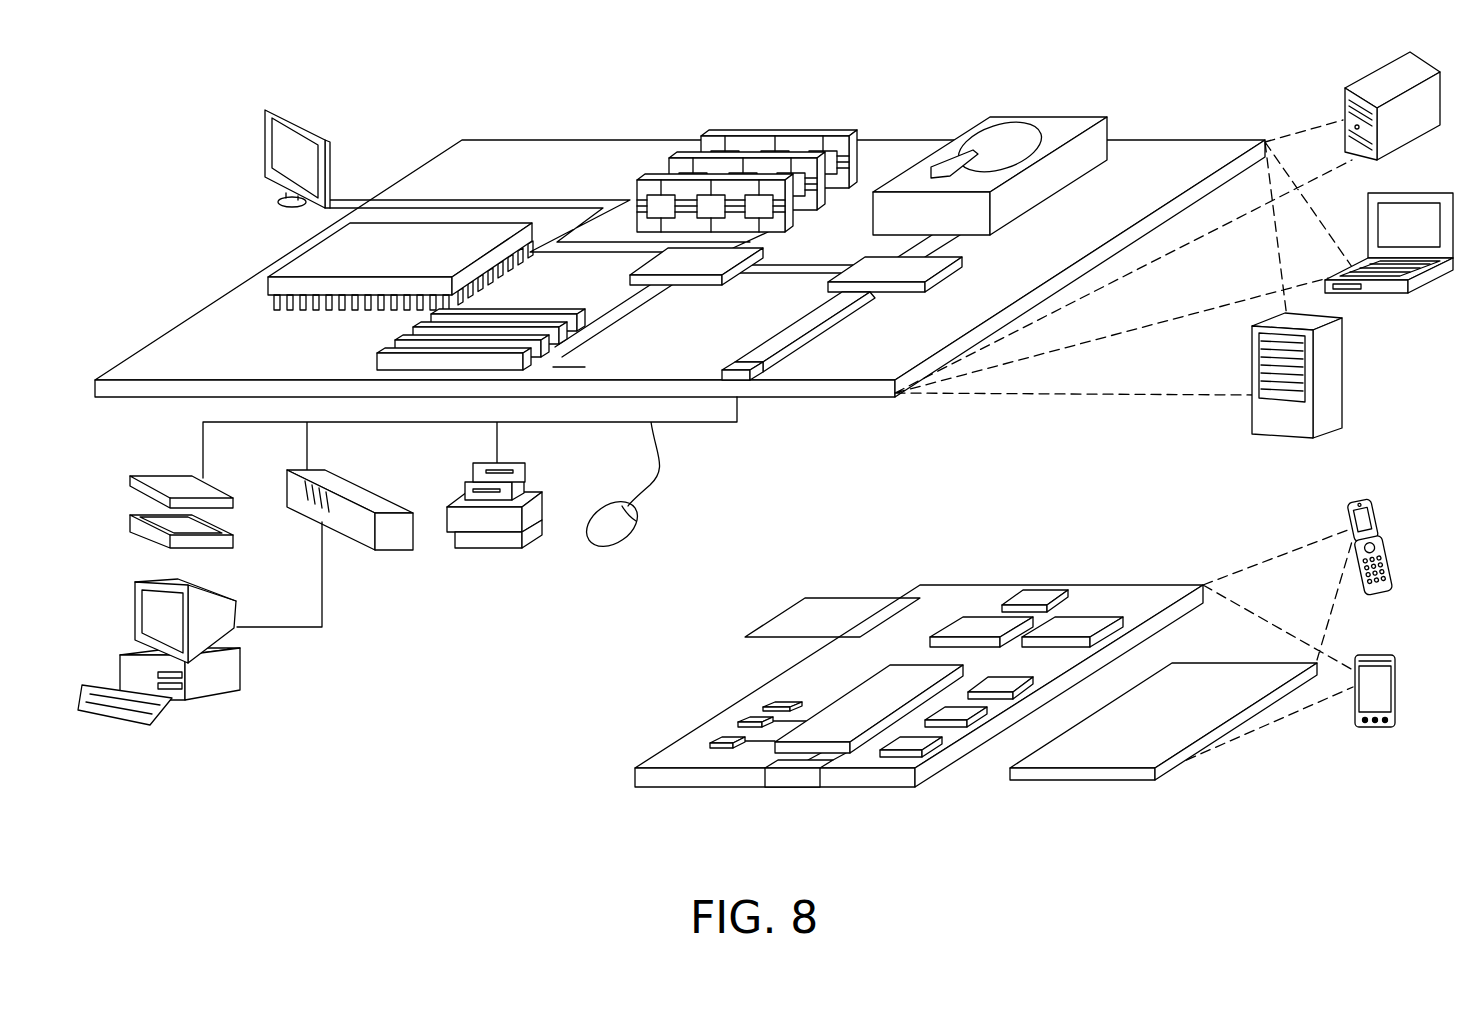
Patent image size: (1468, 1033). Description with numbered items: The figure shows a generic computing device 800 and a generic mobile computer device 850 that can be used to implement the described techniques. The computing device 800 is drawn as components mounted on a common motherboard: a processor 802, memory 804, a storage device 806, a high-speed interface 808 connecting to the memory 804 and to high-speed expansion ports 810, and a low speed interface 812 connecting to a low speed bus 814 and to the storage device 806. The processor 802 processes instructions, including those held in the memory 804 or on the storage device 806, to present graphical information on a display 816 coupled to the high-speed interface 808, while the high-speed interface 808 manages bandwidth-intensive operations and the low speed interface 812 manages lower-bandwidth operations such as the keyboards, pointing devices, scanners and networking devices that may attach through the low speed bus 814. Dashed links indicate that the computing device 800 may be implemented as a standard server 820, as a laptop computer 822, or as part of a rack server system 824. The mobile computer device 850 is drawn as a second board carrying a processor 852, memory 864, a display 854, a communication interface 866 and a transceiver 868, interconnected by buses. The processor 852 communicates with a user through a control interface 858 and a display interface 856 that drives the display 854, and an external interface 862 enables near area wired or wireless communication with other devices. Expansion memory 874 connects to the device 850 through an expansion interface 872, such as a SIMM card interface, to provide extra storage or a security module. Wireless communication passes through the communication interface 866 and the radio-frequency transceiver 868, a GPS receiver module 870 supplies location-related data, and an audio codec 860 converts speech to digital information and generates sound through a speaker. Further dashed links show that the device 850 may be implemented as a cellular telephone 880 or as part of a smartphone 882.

The computing device 800 is at (412, 88).
The processor 802 is at (295, 258).
The memory 804 is at (782, 133).
The storage device 806 is at (1035, 115).
The high-speed interface 808 is at (709, 259).
The high-speed expansion ports 810 is at (407, 340).
The low speed interface 812 is at (864, 263).
The low speed bus 814 is at (741, 365).
The display 816 is at (272, 106).
The standard server 820 is at (1366, 83).
The laptop computer 822 is at (1428, 192).
The rack server system 824 is at (1347, 386).
The mobile computer device 850 is at (585, 793).
The processor 852 is at (837, 715).
The display 854 is at (1204, 680).
The display interface 856 is at (922, 742).
The control interface 858 is at (963, 712).
The audio codec 860 is at (1005, 685).
The external interface 862 is at (794, 771).
The memory 864 is at (737, 722).
The communication interface 866 is at (980, 620).
The transceiver 868 is at (1082, 621).
The GPS receiver module 870 is at (1037, 598).
The expansion interface 872 is at (897, 598).
The expansion memory 874 is at (807, 600).
The cellular telephone 880 is at (1363, 503).
The smartphone 882 is at (1367, 647).